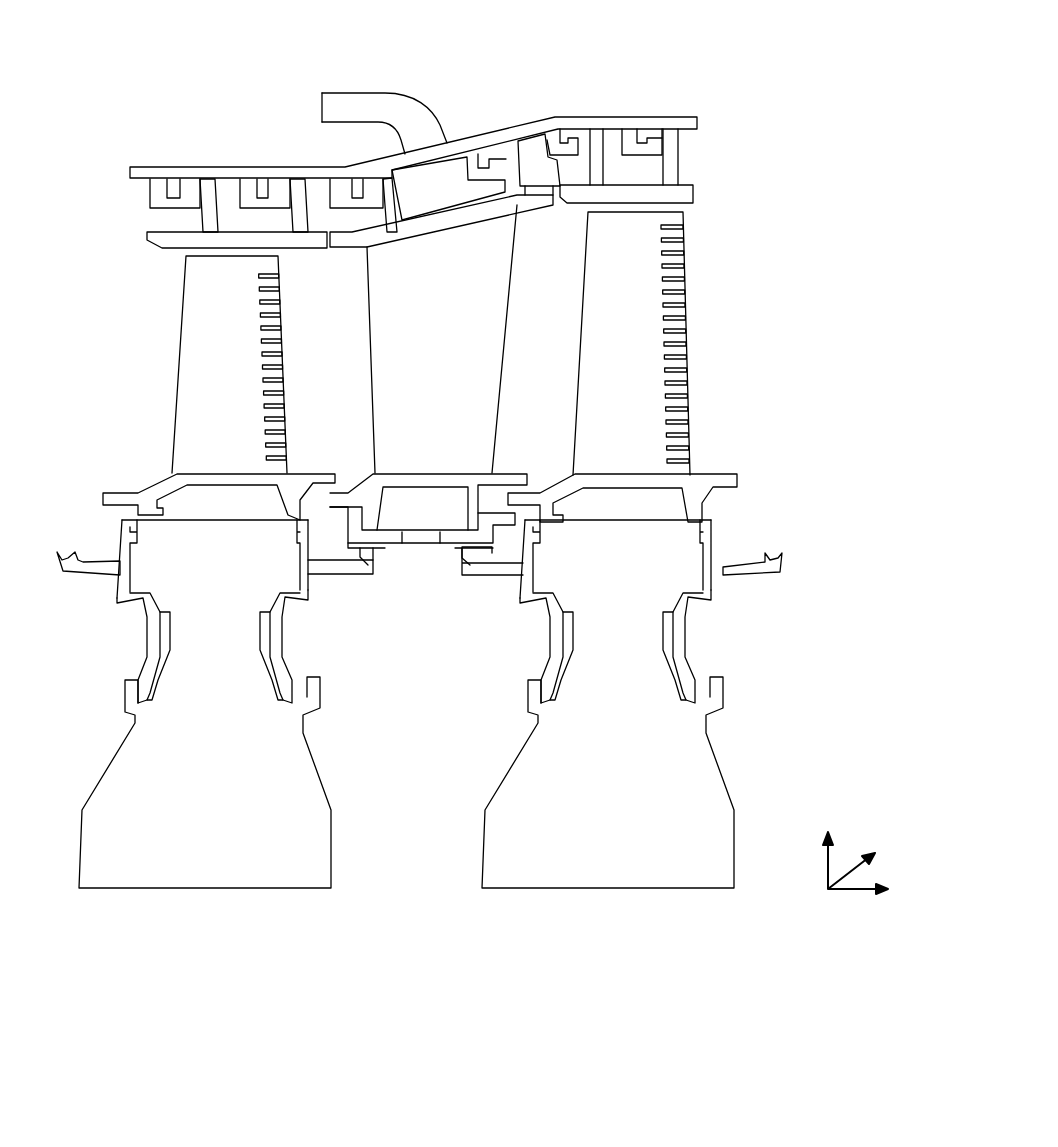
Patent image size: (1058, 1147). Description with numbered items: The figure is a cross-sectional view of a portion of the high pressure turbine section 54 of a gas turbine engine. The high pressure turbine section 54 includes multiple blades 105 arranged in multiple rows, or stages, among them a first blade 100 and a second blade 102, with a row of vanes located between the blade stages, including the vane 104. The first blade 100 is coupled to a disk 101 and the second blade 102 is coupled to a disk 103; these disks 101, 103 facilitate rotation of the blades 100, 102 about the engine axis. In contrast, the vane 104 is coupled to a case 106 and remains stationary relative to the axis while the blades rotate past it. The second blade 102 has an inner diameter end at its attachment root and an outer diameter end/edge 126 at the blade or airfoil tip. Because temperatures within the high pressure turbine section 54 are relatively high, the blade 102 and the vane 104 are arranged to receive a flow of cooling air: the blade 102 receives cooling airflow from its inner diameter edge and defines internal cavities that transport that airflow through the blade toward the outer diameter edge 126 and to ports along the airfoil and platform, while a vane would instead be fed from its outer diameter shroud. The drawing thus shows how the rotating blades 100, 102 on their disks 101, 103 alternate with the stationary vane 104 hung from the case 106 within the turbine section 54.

The high pressure turbine section 54 is at (714, 78).
The first blade 100 is at (178, 353).
The disk 101 is at (312, 797).
The second blade 102 is at (643, 285).
The disk 103 is at (627, 704).
The vane 104 is at (378, 373).
The blades 105 is at (154, 384).
The case 106 is at (513, 118).
The outer diameter end/edge 126 is at (650, 208).